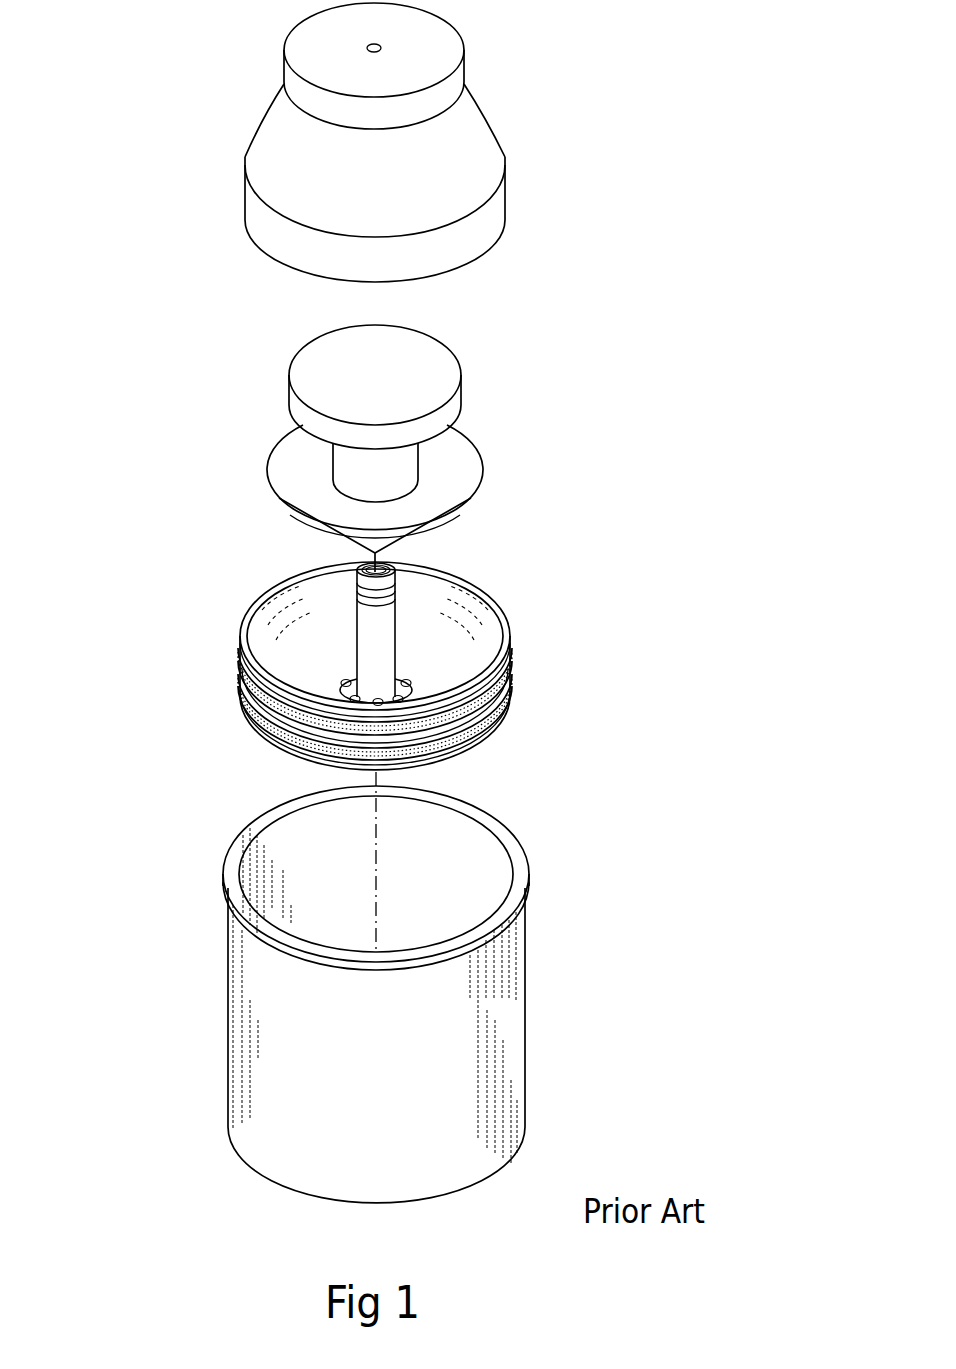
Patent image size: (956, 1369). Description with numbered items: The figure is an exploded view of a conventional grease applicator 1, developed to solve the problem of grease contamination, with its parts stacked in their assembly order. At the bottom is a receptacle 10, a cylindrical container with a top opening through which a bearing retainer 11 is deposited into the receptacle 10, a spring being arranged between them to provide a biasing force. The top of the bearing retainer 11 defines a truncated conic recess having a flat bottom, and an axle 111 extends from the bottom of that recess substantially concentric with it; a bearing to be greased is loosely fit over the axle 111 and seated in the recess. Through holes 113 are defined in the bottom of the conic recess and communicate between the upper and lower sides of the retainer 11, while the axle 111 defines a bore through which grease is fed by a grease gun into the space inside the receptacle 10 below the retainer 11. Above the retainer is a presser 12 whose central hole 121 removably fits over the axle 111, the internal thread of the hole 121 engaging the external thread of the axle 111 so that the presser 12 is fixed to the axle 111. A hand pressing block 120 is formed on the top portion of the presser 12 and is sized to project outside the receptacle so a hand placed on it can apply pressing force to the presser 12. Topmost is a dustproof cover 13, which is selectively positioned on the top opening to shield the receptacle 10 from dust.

The grease applicator 1 is at (600, 294).
The receptacle 10 is at (222, 946).
The bearing retainer 11 is at (238, 654).
The axle 111 is at (358, 627).
The through holes 113 is at (416, 683).
The presser 12 is at (293, 454).
The hand pressing block 120 is at (428, 378).
The central hole 121 is at (380, 555).
The dustproof cover 13 is at (273, 144).